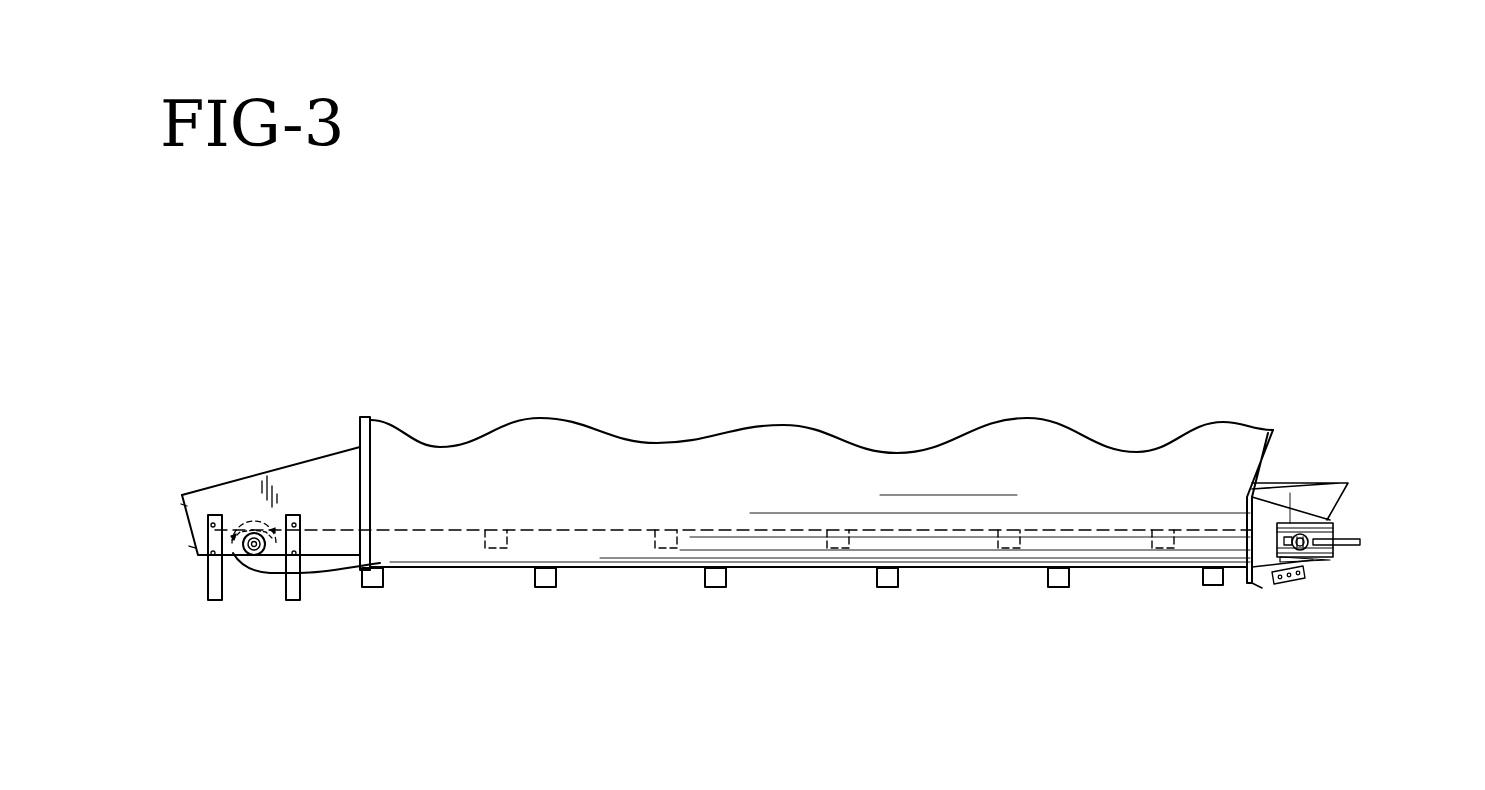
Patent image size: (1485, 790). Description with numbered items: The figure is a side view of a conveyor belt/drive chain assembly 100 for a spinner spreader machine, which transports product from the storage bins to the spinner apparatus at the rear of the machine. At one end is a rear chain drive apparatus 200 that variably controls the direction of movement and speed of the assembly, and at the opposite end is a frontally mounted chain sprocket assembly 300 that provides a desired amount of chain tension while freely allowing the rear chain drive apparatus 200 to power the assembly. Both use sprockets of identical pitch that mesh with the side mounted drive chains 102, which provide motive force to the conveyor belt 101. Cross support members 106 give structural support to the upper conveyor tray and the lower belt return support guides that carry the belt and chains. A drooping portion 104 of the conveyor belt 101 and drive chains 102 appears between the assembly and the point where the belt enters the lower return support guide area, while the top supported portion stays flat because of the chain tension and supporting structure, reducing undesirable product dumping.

The conveyor belt/drive chain assembly 100 is at (840, 258).
The conveyor belt 101 is at (275, 484).
The drive chain 102 is at (313, 528).
The drooping portion 104 is at (325, 573).
The cross support members 106 is at (660, 548).
The rear chain drive apparatus 200 is at (248, 570).
The frontally mounted chain sprocket assembly 300 is at (1360, 522).